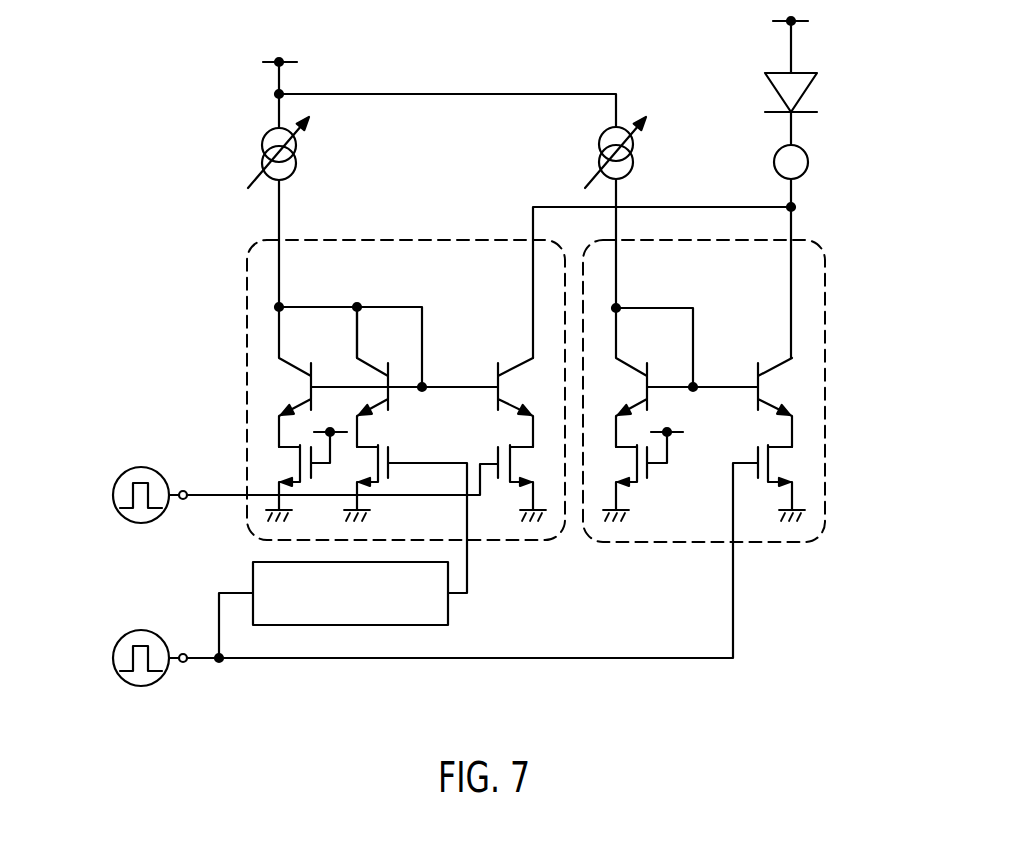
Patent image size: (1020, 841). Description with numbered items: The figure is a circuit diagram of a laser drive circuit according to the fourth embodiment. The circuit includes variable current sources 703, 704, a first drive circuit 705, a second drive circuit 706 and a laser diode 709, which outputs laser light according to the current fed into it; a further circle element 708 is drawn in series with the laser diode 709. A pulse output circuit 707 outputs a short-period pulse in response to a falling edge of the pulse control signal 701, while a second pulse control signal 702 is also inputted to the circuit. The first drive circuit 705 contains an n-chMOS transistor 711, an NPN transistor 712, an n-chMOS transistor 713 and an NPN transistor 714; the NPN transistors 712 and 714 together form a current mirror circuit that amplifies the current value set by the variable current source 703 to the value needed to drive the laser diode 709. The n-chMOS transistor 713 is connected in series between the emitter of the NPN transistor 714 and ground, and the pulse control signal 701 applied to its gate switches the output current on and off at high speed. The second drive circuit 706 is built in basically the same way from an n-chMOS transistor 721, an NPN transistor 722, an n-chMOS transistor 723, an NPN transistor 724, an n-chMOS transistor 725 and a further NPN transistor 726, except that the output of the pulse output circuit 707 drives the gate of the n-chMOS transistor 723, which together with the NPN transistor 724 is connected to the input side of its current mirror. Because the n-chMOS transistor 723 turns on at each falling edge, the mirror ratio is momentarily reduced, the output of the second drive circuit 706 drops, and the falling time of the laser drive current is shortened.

The pulse control signal 701 is at (113, 658).
The pulse control signal 702 is at (113, 495).
The variable current source 703 is at (598, 151).
The variable current source 704 is at (262, 150).
The first drive circuit 705 is at (826, 325).
The second drive circuit 706 is at (247, 290).
The pulse output circuit 707 is at (448, 612).
The light emitting element 708 is at (808, 162).
The laser diode 709 is at (817, 97).
The n-chMOS transistor 711 is at (618, 463).
The NPN transistor 712 is at (632, 357).
The n-chMOS transistor 713 is at (783, 463).
The NPN transistor 714 is at (782, 387).
The n-chMOS transistor 721 is at (285, 465).
The NPN transistor 722 is at (283, 387).
The n-chMOS transistor 723 is at (398, 464).
The NPN transistor 724 is at (378, 357).
The n-chMOS transistor 725 is at (532, 462).
The bipolar transistor 726 is at (510, 357).